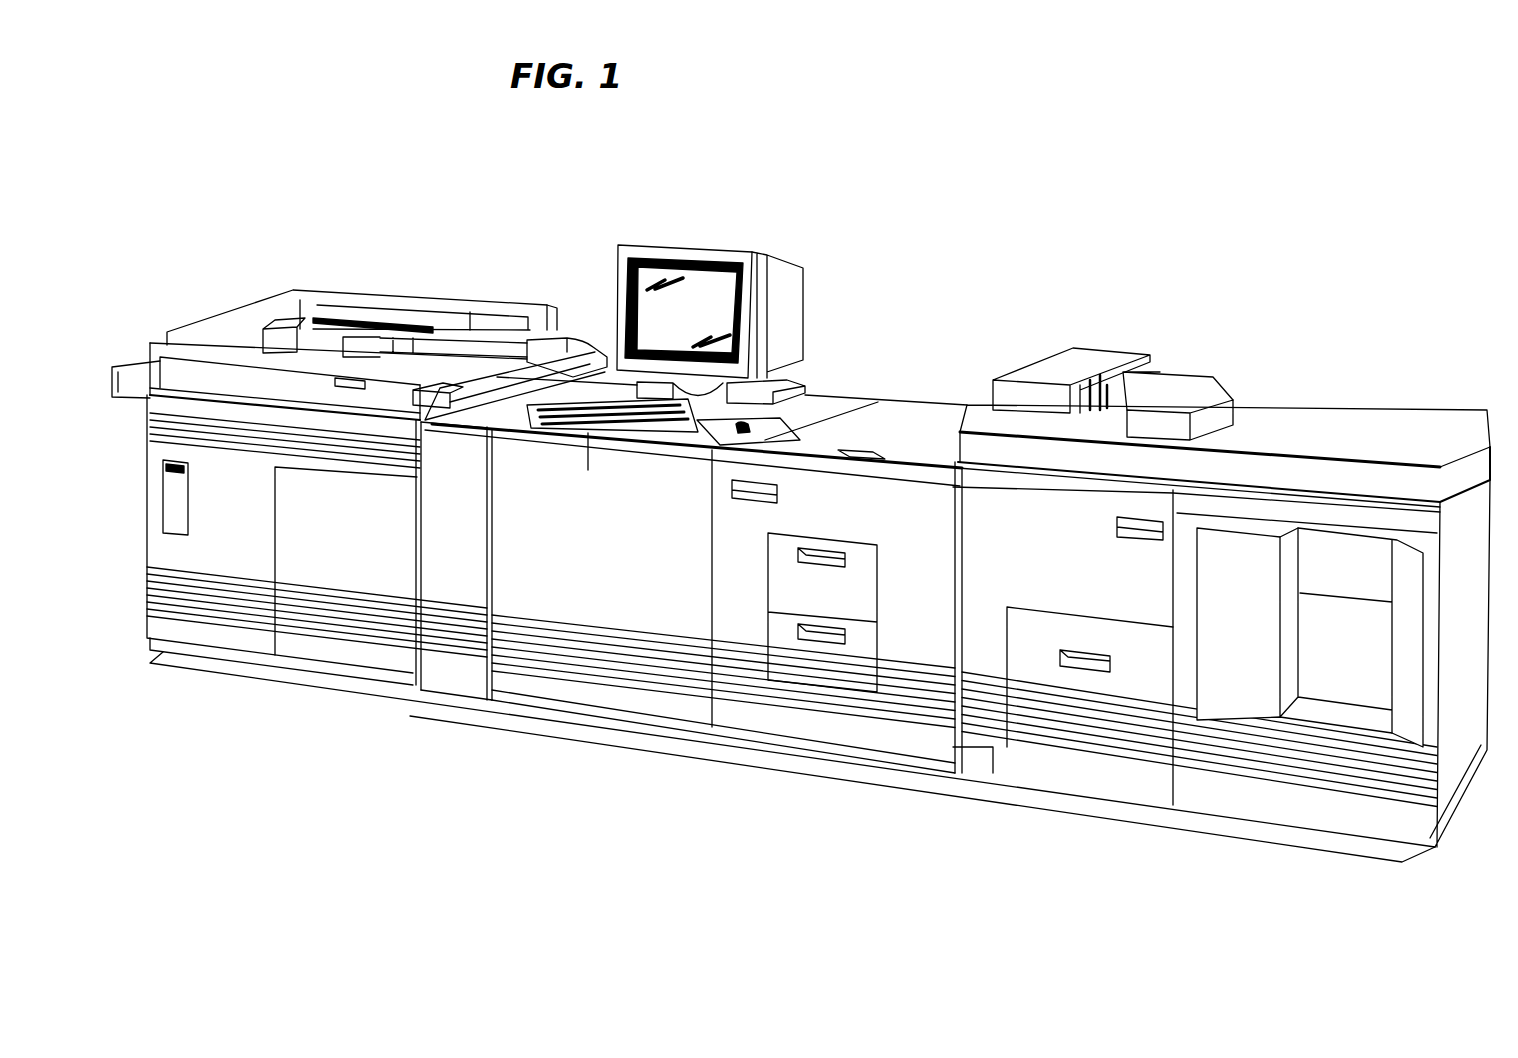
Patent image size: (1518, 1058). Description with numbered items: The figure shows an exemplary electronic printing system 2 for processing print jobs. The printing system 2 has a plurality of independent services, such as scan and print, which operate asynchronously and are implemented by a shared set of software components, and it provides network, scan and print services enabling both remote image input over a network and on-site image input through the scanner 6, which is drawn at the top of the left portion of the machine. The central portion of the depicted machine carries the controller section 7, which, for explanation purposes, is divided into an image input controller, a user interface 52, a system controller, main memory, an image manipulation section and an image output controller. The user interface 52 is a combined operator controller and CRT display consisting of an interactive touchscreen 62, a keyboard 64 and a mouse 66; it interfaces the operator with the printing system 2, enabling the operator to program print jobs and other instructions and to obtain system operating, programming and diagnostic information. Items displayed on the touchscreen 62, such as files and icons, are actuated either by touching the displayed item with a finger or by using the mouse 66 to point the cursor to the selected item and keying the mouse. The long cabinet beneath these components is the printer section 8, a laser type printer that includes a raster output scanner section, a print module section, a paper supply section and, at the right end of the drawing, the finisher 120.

The printing system 2 is at (948, 157).
The scanner 6 is at (405, 258).
The controller section 7 is at (130, 542).
The printer section 8 is at (1430, 870).
The user interface 52 is at (715, 219).
The interactive touchscreen 62 is at (648, 318).
The keyboard 64 is at (601, 440).
The mouse 66 is at (735, 410).
The finisher 120 is at (1335, 356).